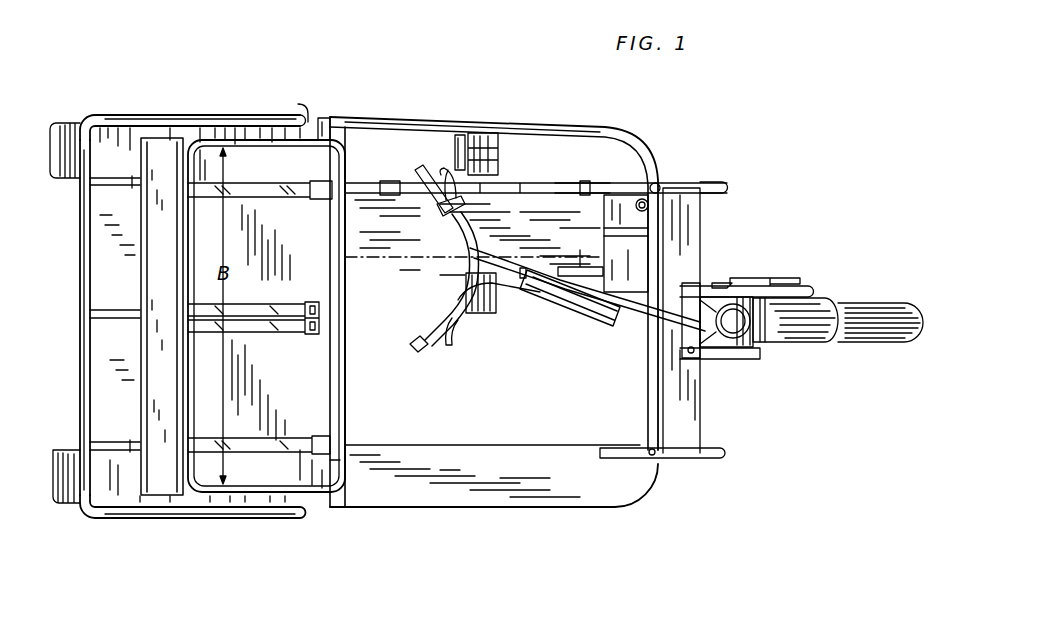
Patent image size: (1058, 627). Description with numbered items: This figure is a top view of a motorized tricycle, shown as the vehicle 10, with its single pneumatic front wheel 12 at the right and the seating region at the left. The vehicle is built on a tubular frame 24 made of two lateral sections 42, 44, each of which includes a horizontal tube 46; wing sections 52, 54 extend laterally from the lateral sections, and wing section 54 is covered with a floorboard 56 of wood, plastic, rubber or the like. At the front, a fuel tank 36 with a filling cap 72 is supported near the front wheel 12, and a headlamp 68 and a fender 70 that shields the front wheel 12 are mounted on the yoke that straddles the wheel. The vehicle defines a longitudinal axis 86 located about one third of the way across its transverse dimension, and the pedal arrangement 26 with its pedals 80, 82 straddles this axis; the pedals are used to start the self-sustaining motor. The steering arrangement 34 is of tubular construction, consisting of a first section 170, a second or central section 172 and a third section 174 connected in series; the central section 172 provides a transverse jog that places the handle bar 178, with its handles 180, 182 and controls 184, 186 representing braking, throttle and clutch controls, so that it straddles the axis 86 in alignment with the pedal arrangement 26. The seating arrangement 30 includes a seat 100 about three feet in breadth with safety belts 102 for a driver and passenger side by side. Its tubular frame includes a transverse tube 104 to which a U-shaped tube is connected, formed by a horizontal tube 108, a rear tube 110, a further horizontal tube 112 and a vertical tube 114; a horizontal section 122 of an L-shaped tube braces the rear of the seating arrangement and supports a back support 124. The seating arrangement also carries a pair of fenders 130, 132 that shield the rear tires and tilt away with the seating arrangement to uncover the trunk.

The vehicle 10 is at (431, 108).
The front wheel 12 is at (879, 372).
The tubular frame 24 is at (550, 163).
The pedal arrangement 26 is at (466, 135).
The seating arrangement 30 is at (312, 410).
The steering arrangement 34 is at (571, 267).
The fuel tank 36 is at (716, 253).
The lateral section 42 is at (724, 457).
The lateral section 44 is at (722, 182).
The horizontal tube 46 is at (573, 182).
The wing section 52 is at (370, 120).
The wing section 54 is at (400, 508).
The floorboard 56 is at (497, 499).
The headlamp 68 is at (783, 350).
The fender 70 is at (817, 318).
The cap 72 is at (640, 199).
The pedal 80 is at (500, 148).
The pedal 82 is at (490, 314).
The longitudinal axis 86 is at (398, 264).
The seat 100 is at (313, 233).
The safety belts 102 is at (262, 312).
The transverse tube 104 is at (320, 118).
The horizontal tube 108 is at (207, 522).
The rear tube 110 is at (79, 242).
The horizontal tube 112 is at (130, 114).
The vertical tube 114 is at (298, 106).
The horizontal section 122 is at (112, 312).
The back support 124 is at (153, 371).
The fender 130 is at (98, 118).
The fender 132 is at (117, 493).
The first section 170 is at (718, 359).
The second section 172 is at (587, 305).
The third section 174 is at (530, 258).
The handle bar 178 is at (460, 292).
The handle 180 is at (428, 342).
The handle 182 is at (418, 176).
The control 184 is at (455, 335).
The control 186 is at (446, 172).